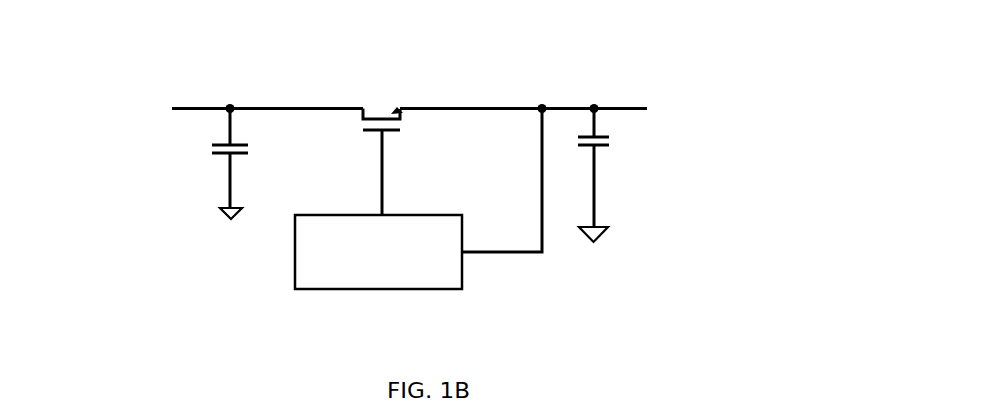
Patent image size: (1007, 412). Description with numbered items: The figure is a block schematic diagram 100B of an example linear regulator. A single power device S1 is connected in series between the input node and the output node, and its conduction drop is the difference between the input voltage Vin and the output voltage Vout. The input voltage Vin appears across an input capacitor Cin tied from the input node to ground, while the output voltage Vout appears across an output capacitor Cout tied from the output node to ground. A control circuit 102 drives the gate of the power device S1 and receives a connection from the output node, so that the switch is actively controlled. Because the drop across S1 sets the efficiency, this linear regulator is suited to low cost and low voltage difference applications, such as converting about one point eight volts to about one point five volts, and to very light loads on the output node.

The block schematic diagram 100B is at (765, 40).
The control circuit 102 is at (438, 277).
The power device S1 is at (383, 113).
The input capacitor Cin is at (212, 148).
The output capacitor Cout is at (612, 140).
The input voltage Vin is at (148, 106).
The output voltage Vout is at (676, 110).